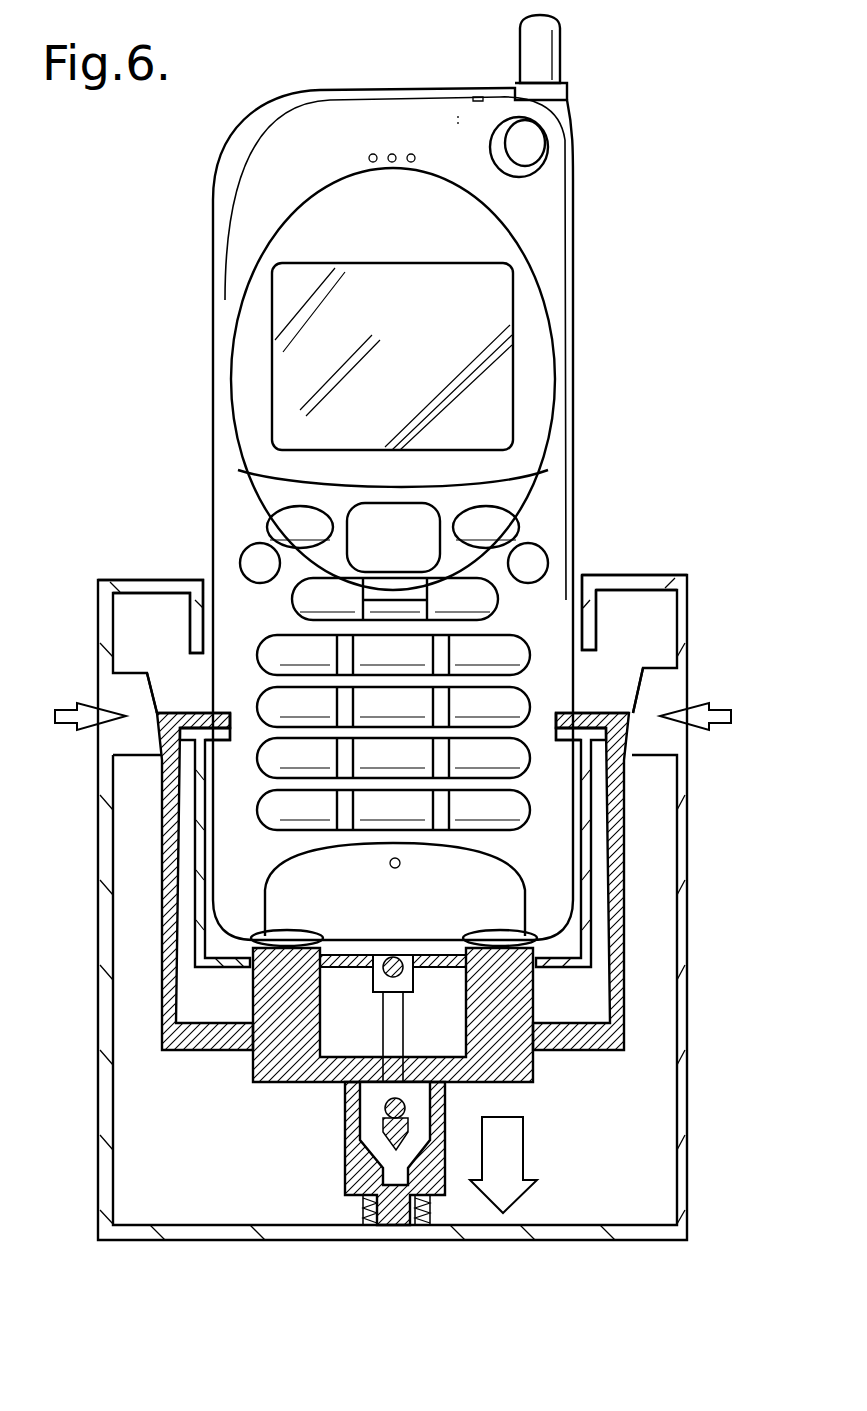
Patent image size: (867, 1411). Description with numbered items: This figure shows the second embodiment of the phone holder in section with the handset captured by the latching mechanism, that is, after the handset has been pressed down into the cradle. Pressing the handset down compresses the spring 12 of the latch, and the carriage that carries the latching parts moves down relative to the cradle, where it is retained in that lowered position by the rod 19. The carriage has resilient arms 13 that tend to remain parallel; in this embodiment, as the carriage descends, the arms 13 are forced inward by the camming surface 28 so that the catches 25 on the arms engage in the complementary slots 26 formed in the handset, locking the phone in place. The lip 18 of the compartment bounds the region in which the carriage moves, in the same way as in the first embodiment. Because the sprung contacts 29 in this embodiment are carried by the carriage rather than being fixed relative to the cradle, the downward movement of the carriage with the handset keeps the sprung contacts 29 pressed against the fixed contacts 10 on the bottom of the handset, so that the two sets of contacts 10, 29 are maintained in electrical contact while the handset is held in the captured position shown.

The fixed contacts 10 is at (473, 933).
The spring 12 is at (365, 1225).
The resilient arms 13 is at (163, 945).
The lip 18 is at (193, 613).
The rod 19 is at (400, 1112).
The catches 25 is at (165, 765).
The complementary slots 26 is at (577, 712).
The camming surface 28 is at (150, 690).
The sprung contacts 29 is at (253, 987).